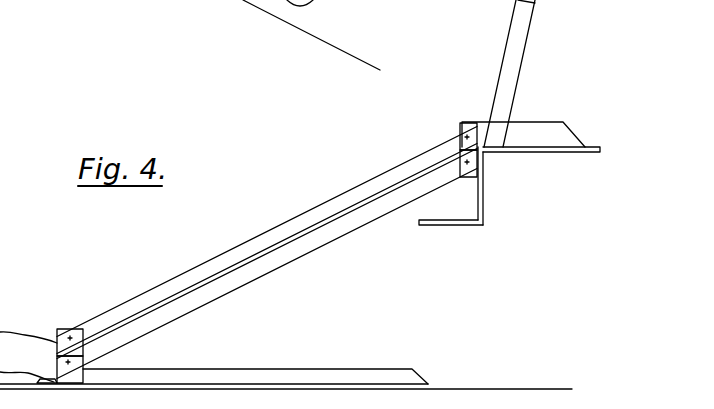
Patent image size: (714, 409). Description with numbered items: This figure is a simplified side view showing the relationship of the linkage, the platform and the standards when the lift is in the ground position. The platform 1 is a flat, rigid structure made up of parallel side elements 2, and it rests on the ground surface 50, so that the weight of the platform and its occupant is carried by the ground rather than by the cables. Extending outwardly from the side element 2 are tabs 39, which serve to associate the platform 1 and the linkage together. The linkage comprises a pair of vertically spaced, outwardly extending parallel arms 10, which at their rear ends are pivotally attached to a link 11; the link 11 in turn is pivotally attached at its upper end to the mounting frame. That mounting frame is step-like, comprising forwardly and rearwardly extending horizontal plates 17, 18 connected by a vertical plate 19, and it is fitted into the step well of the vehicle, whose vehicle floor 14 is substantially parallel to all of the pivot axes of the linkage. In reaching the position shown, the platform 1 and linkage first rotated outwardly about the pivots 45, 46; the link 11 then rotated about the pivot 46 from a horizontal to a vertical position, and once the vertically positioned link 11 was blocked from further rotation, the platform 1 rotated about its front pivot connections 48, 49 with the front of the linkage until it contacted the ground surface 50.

The platform 1 is at (361, 370).
The side element 2 is at (297, 377).
The arm 10 is at (228, 252).
The link 11 is at (472, 122).
The vehicle floor 14 is at (268, 13).
The forwardly extending horizontal plate 17 is at (441, 227).
The rearwardly extending horizontal plate 18 is at (542, 153).
The vertical plate 19 is at (484, 196).
The tab 39 is at (238, 383).
The pivot 45 is at (207, 0).
The pivot 46 is at (459, 132).
The front pivot connection 48 is at (58, 340).
The front pivot connection 49 is at (58, 362).
The ground surface 50 is at (473, 389).